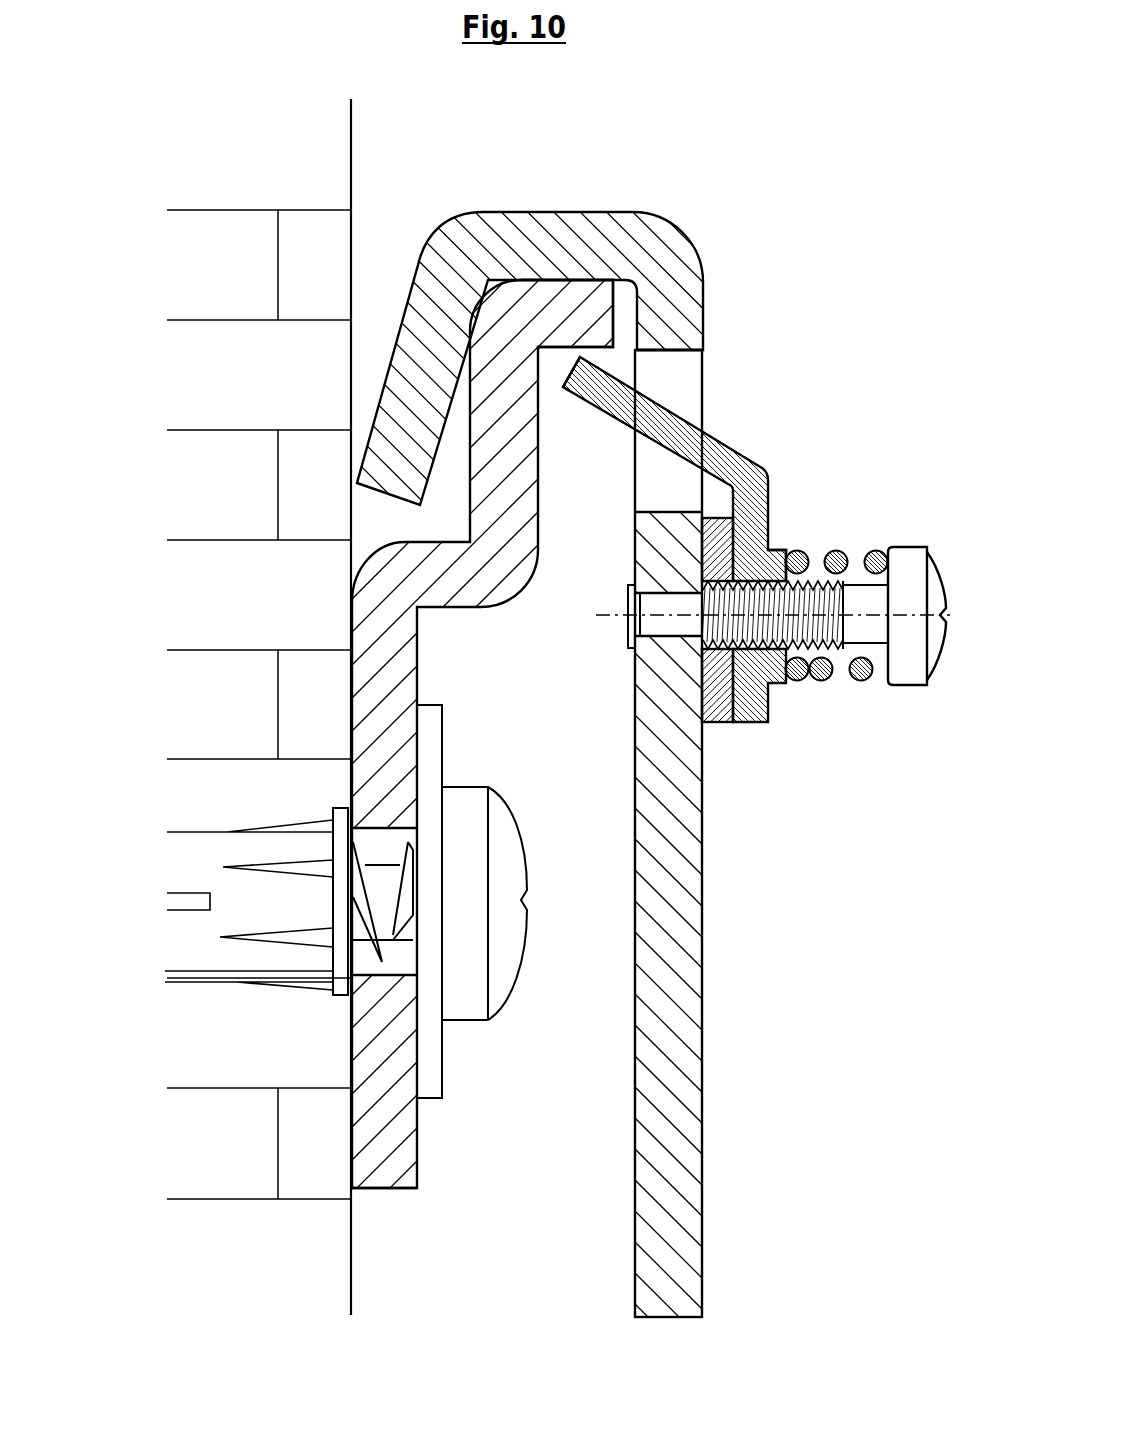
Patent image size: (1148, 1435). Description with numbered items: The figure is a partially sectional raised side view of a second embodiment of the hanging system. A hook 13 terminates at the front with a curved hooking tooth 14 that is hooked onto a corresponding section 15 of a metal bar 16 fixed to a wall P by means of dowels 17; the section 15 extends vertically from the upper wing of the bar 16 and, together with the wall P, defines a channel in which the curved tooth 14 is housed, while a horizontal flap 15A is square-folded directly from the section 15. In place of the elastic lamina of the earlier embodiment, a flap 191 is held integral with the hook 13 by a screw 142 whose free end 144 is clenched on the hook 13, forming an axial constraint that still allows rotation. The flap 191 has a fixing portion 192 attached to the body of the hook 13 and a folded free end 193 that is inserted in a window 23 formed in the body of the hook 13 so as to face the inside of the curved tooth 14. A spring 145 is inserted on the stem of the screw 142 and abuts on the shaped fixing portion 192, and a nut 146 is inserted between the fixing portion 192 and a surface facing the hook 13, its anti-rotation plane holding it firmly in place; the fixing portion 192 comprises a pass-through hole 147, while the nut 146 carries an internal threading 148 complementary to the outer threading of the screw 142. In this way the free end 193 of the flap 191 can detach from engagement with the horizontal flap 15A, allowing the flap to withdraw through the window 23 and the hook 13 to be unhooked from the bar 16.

The wall P is at (307, 222).
The hook 13 is at (703, 1180).
The curved hooking tooth 14 is at (400, 382).
The section 15 is at (477, 477).
The horizontal flap 15A is at (570, 293).
The metal bar 16 is at (393, 1190).
The dowel 17 is at (293, 959).
The window 23 is at (697, 395).
The screw 142 is at (922, 545).
The free end 144 is at (627, 628).
The spring 145 is at (827, 683).
The nut 146 is at (717, 712).
The pass-through hole 147 is at (715, 610).
The internal threading 148 is at (703, 615).
The flap 191 is at (760, 463).
The fixing portion 192 is at (760, 710).
The folded free end 193 is at (643, 395).